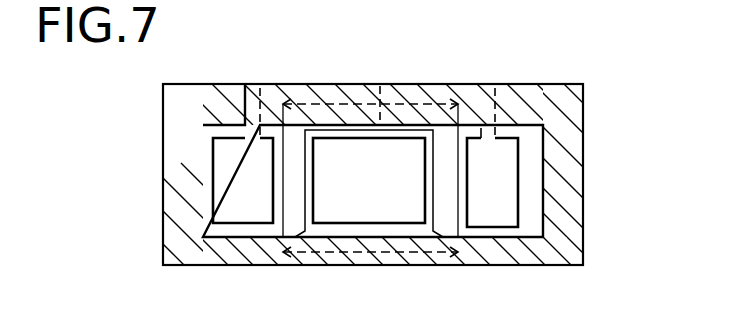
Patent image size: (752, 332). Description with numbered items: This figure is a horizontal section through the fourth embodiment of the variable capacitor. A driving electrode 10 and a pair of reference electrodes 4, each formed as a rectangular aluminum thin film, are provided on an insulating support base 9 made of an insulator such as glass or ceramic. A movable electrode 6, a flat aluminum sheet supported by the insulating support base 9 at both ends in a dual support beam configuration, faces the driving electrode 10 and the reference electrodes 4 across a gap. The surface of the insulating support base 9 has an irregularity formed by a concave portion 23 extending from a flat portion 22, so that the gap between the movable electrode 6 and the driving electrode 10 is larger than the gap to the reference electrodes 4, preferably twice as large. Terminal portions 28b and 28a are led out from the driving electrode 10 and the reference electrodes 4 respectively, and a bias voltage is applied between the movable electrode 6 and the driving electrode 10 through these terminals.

The insulating support base 9 is at (567, 130).
The movable electrode 6 is at (537, 213).
The flat portion 22 is at (222, 233).
The reference electrodes 4 is at (243, 208).
The driving electrode 10 is at (358, 205).
The concave portion 23 is at (427, 233).
The terminal portions 28a is at (262, 92).
The terminal portion 28b is at (384, 87).